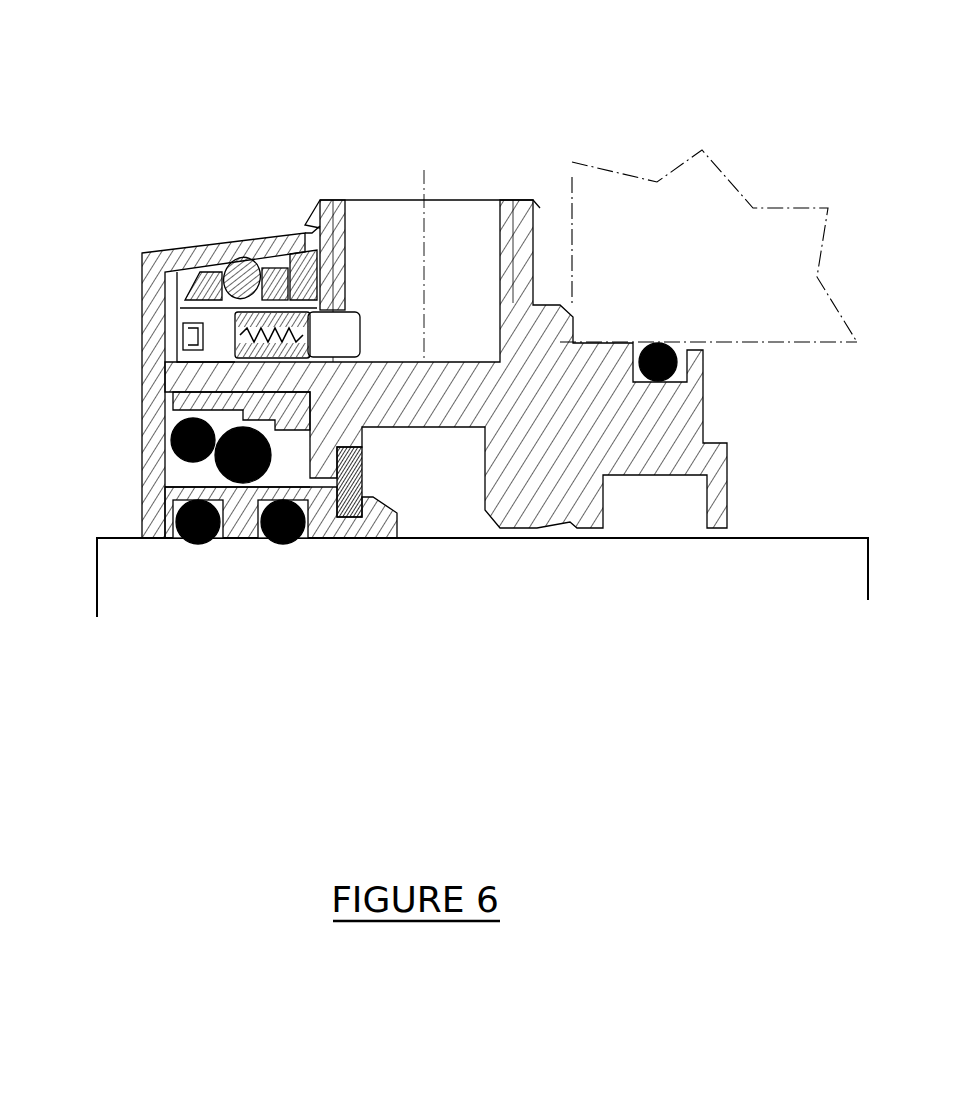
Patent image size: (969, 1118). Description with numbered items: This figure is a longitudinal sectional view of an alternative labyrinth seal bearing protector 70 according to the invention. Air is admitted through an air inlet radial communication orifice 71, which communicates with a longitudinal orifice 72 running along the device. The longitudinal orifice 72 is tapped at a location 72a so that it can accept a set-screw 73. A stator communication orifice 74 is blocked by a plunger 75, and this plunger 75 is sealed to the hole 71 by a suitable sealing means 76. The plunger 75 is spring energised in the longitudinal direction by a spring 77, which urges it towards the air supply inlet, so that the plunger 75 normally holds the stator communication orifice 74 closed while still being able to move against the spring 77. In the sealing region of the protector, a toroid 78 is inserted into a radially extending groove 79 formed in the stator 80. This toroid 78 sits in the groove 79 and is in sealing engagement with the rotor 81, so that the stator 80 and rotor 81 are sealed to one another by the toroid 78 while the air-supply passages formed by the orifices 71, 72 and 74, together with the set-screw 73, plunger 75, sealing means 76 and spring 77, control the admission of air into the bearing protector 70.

The labyrinth seal bearing protector 70 is at (152, 112).
The air inlet radial communication orifice 71 is at (460, 222).
The longitudinal orifice 72 is at (372, 335).
The tapped portion 72a is at (142, 253).
The set-screw 73 is at (185, 370).
The stator communication orifice 74 is at (276, 272).
The plunger 75 is at (312, 352).
The sealing means 76 is at (255, 366).
The spring 77 is at (240, 330).
The toroid 78 is at (235, 260).
The radially extending groove 79 is at (200, 278).
The stator 80 is at (520, 222).
The rotor 81 is at (200, 338).